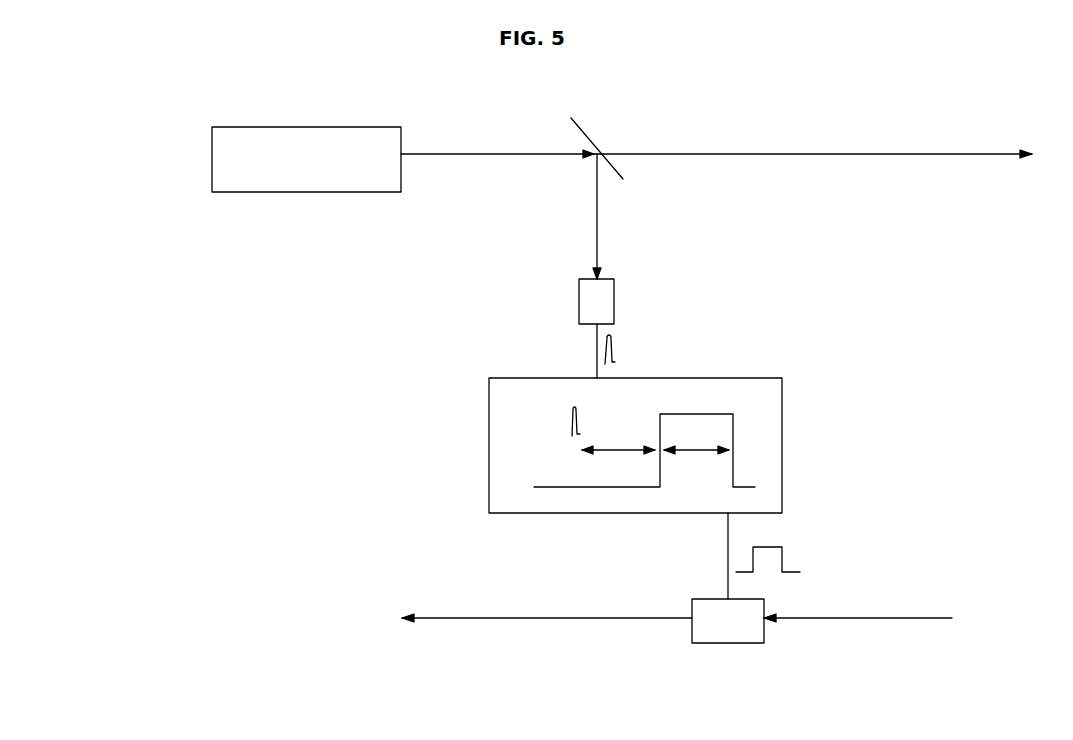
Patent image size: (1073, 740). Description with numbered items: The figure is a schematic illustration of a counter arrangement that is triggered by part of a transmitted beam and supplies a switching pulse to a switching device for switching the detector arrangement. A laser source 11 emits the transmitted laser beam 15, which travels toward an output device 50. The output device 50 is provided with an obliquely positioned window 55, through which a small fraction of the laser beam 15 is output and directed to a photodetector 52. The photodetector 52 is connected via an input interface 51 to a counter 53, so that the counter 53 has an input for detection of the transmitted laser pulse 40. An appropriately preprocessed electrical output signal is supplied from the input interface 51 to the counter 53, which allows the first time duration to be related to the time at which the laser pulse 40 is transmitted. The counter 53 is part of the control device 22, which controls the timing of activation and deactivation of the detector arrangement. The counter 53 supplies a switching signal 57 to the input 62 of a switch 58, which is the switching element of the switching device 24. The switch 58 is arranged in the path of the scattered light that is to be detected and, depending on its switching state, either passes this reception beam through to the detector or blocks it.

The laser source 11 is at (287, 127).
The transmitted laser beam 15 is at (474, 152).
The obliquely positioned window 55 is at (578, 127).
The output device 50 is at (744, 103).
The photodetector 52 is at (614, 288).
The input interface 51 is at (596, 346).
The transmitted laser pulse 40 is at (617, 348).
The control device 22 is at (466, 407).
The counter 53 is at (782, 404).
The input of the switch 62 is at (728, 553).
The switching signal 57 is at (784, 552).
The switch 58 is at (744, 643).
The switching device 24 is at (878, 328).